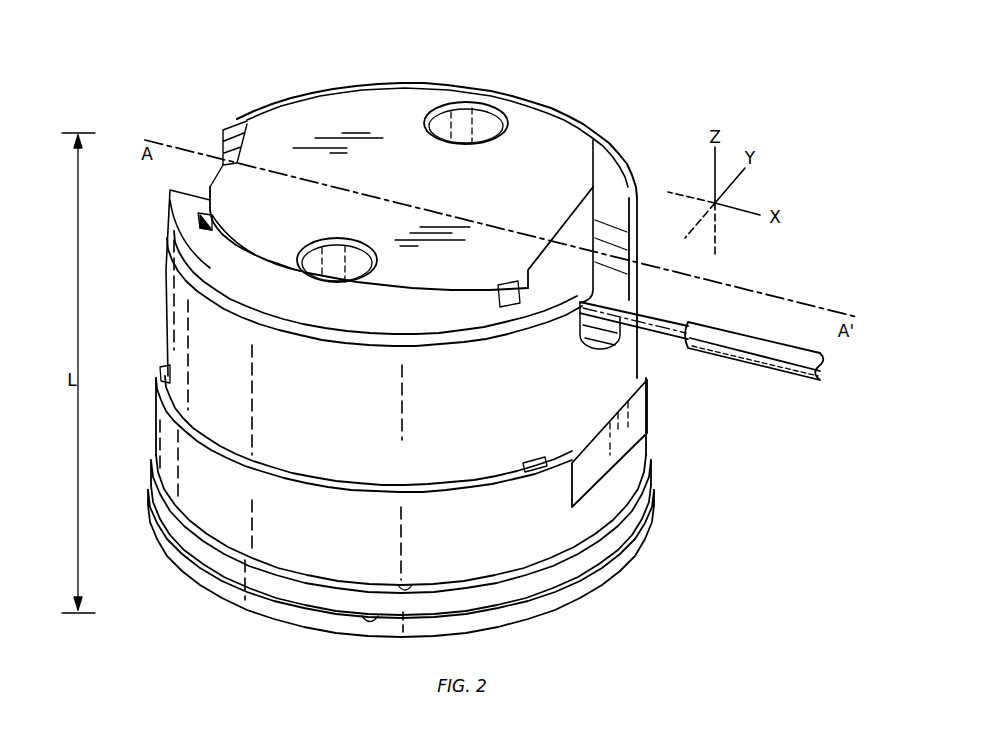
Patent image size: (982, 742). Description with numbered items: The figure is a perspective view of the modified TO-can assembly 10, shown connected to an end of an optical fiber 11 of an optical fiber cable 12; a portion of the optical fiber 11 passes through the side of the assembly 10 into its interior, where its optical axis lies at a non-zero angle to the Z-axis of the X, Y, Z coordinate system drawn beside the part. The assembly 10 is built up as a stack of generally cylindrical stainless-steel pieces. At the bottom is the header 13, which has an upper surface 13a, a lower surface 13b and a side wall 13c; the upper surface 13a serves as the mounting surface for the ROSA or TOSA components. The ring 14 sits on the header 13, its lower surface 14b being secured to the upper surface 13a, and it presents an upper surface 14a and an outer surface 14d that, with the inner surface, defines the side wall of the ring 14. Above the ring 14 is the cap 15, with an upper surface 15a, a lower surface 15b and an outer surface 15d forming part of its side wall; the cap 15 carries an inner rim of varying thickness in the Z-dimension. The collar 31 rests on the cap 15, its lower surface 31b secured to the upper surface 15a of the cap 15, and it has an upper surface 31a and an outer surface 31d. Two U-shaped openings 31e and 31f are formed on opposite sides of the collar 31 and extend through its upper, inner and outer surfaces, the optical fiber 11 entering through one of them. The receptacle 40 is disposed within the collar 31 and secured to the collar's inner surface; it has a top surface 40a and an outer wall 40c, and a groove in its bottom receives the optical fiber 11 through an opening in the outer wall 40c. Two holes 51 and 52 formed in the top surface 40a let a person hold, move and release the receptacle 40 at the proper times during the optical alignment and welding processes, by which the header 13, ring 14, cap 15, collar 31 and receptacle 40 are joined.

The modified TO-can assembly 10 is at (195, 88).
The optical fiber 11 is at (665, 321).
The optical fiber cable 12 is at (773, 364).
The header 13 is at (401, 497).
The upper surface of header 13a is at (187, 541).
The lower surface of header 13b is at (347, 639).
The side wall of header 13c is at (297, 614).
The ring 14 is at (188, 575).
The upper surface of ring 14a is at (153, 503).
The lower surface of ring 14b is at (370, 616).
The outer surface of ring 14d is at (260, 581).
The cap 15 is at (167, 441).
The upper surface of cap 15a is at (268, 479).
The lower surface of cap 15b is at (413, 586).
The outer surface of cap 15d is at (542, 540).
The collar 31 is at (164, 317).
The upper surface of collar 31a is at (275, 313).
The lower surface of collar 31b is at (333, 487).
The outer surface of collar 31d is at (172, 279).
The U-shaped opening 31e is at (598, 343).
The U-shaped opening 31f is at (232, 150).
The receptacle 40 is at (562, 138).
The top surface of receptacle 40a is at (332, 105).
The outer wall of receptacle 40c is at (410, 310).
The hole 51 is at (449, 134).
The hole 52 is at (327, 249).